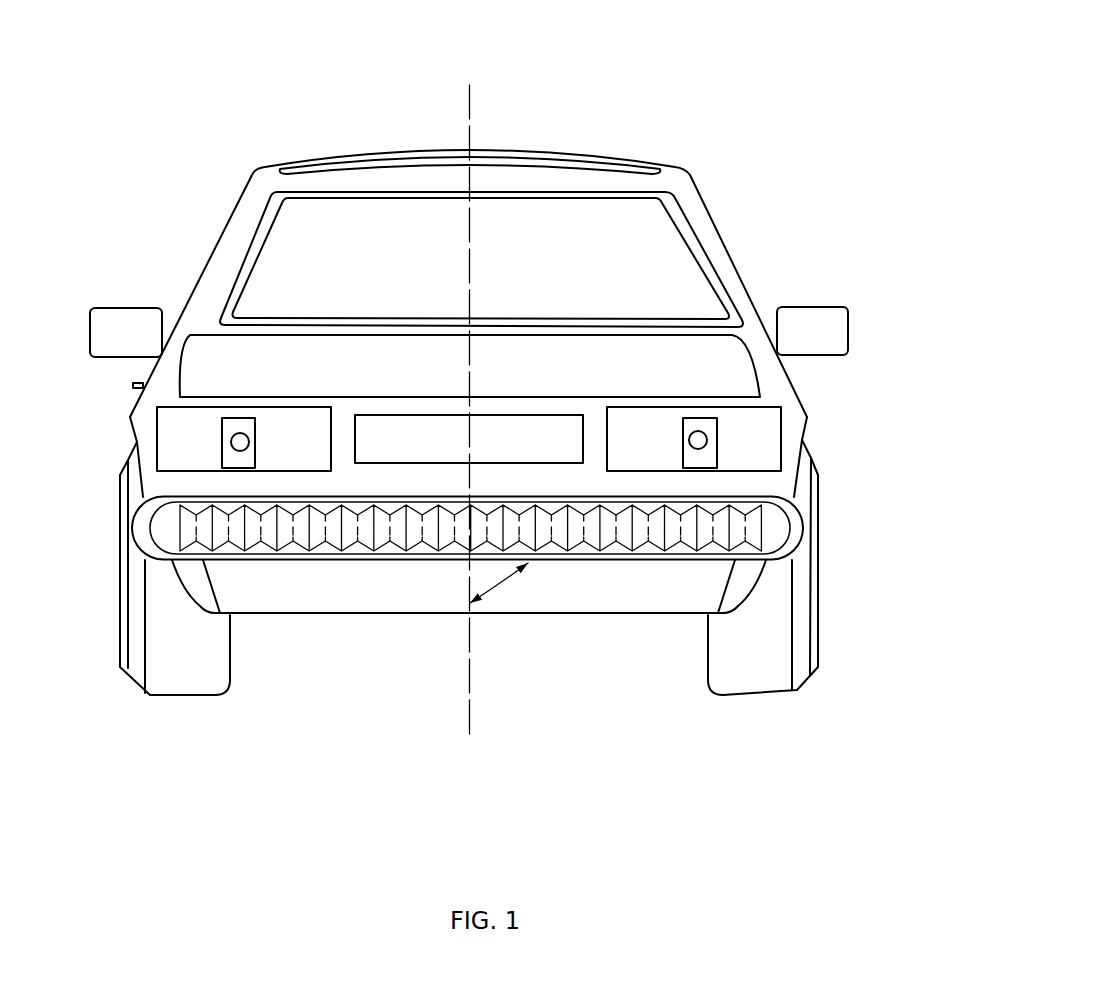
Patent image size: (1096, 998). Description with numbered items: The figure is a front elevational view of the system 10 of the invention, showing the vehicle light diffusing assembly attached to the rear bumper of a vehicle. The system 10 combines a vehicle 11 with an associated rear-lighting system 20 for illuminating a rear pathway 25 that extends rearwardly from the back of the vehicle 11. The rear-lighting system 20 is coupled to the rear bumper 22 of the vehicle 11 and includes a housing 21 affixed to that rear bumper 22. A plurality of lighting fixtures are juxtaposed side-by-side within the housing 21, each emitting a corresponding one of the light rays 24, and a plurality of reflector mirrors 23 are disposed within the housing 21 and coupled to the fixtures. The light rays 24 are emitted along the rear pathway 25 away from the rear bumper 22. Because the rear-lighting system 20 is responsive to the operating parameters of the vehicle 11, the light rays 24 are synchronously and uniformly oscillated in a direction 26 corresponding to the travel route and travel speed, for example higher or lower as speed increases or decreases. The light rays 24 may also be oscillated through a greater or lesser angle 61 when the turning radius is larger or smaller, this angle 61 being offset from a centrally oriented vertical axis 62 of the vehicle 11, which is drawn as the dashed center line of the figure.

The vehicle light diffusing assembly system 10 is at (703, 118).
The vehicle 11 is at (732, 268).
The rear-lighting system 20 is at (775, 525).
The housing 21 is at (163, 517).
The rear bumper 22 is at (247, 573).
The reflector mirrors 23 is at (442, 572).
The light rays 24 is at (293, 535).
The rear pathway 25 is at (663, 697).
The direction 26 is at (313, 602).
The angle 61 is at (502, 592).
The centrally oriented vertical axis 62 is at (470, 132).